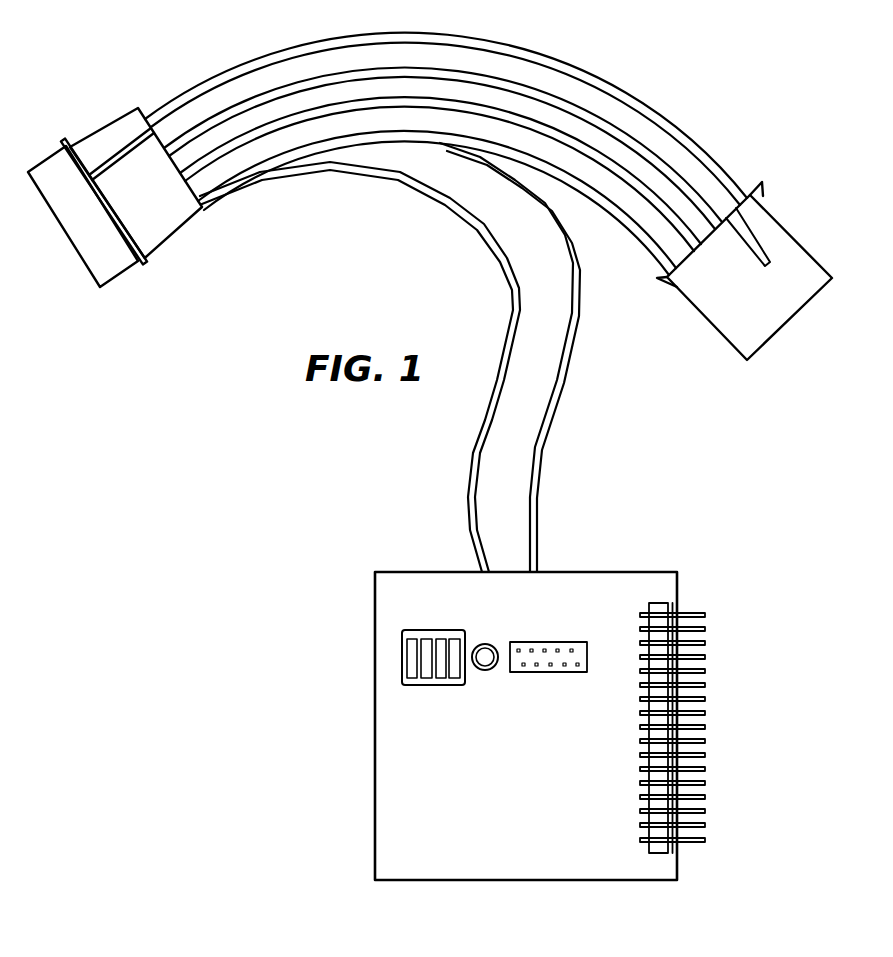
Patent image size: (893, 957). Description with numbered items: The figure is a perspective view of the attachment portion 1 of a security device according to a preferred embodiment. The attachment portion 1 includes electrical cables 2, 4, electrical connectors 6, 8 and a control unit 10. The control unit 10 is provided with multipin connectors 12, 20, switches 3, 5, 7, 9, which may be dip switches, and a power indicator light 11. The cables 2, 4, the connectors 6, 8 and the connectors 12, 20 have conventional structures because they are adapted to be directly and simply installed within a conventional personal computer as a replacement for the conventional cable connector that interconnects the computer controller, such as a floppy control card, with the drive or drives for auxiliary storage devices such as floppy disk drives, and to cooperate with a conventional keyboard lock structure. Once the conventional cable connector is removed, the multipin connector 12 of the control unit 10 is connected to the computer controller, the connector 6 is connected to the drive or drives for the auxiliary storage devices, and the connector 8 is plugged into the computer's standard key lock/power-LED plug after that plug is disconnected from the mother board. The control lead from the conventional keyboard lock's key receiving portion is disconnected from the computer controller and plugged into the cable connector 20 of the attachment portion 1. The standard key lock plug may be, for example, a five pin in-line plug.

The attachment portion 1 is at (660, 487).
The electrical cable 2 is at (546, 62).
The switch 3 is at (413, 670).
The electrical cable 4 is at (512, 307).
The switch 5 is at (425, 673).
The electrical connector 6 is at (108, 268).
The switch 7 is at (442, 673).
The electrical connector 8 is at (708, 313).
The switch 9 is at (463, 670).
The control unit 10 is at (505, 882).
The power indicator light 11 is at (483, 650).
The multipin connector 12 is at (703, 625).
The multipin connector 20 is at (567, 672).